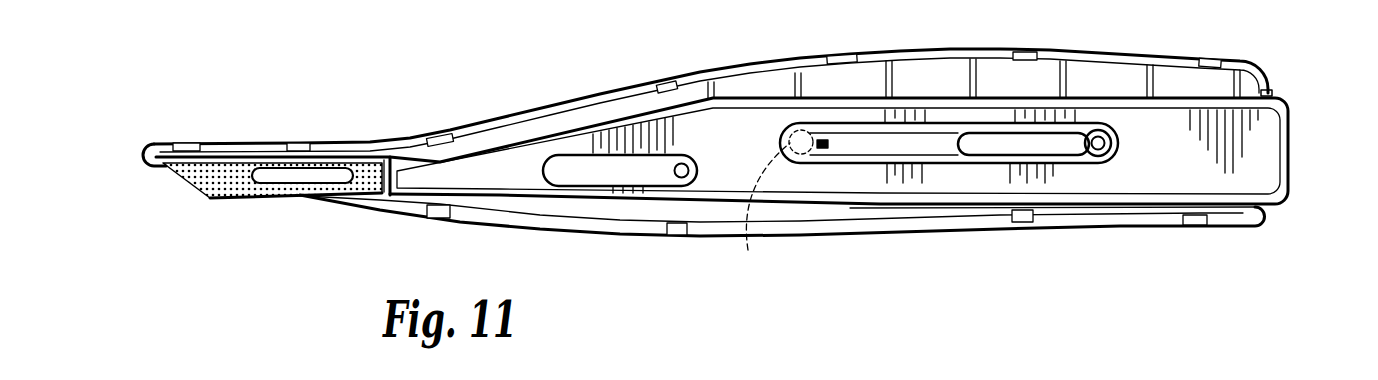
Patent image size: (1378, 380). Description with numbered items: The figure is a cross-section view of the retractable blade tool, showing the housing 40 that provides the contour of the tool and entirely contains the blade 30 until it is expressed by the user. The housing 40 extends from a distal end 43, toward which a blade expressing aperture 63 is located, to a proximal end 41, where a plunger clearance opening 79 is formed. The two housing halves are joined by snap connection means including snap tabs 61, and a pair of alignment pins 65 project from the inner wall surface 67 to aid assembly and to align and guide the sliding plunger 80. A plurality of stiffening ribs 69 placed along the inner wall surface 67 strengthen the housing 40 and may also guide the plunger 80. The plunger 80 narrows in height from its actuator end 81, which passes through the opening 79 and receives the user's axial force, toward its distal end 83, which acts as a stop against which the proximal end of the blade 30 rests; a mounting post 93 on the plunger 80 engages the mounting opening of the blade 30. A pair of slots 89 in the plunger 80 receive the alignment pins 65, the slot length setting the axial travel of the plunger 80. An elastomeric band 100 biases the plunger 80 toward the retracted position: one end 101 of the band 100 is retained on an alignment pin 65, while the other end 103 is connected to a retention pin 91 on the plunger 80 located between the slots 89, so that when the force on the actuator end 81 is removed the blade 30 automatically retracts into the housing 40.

The blade 30 is at (208, 202).
The housing 40 is at (553, 107).
The proximal end of housing 41 is at (1267, 220).
The distal end of housing 43 is at (142, 167).
The snap tab 61 is at (1200, 228).
The blade expressing aperture 63 is at (250, 205).
The alignment pin 65 is at (667, 177).
The inner wall surface 67 is at (763, 85).
The stiffening rib 69 is at (982, 75).
The plunger clearance opening 79 is at (1280, 95).
The sliding plunger 80 is at (1093, 100).
The actuator end of plunger 81 is at (1293, 158).
The distal end of plunger 83 is at (387, 195).
The slot 89 is at (575, 184).
The retention pin 91 is at (807, 137).
The mounting post 93 is at (320, 174).
The elastomeric band 100 is at (943, 122).
The end of elastomer band 101 is at (1115, 153).
The other end of elastomer band 103 is at (754, 210).